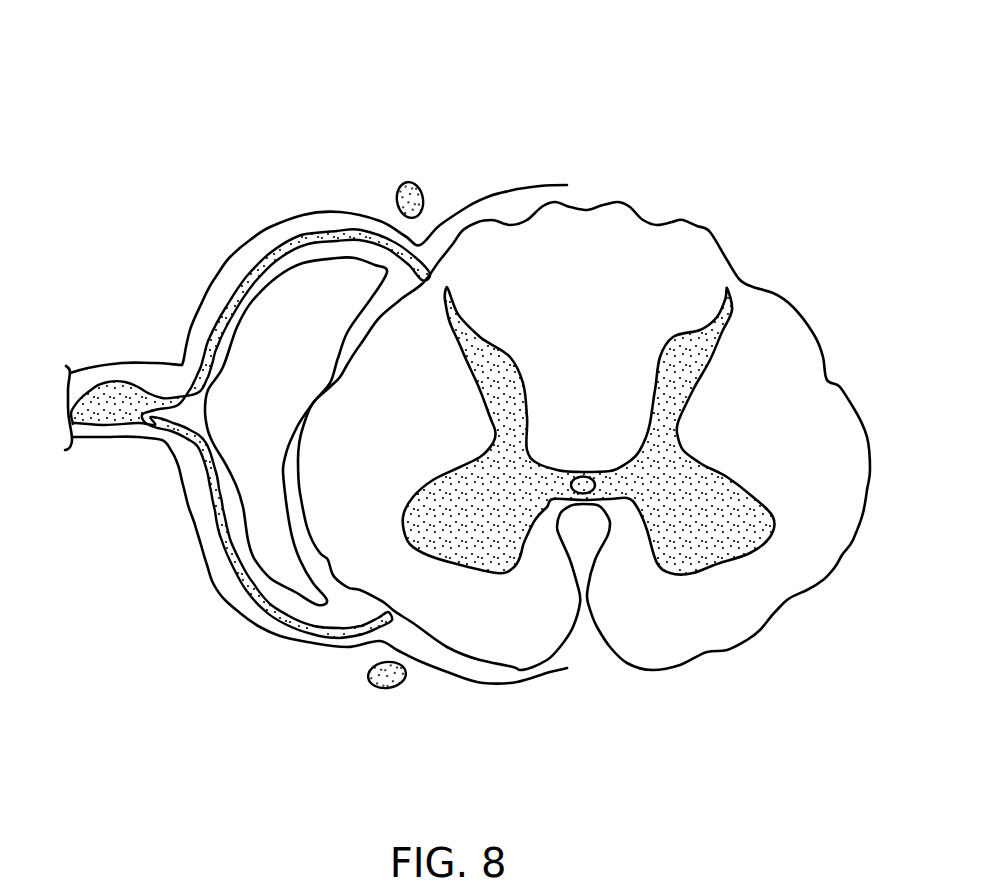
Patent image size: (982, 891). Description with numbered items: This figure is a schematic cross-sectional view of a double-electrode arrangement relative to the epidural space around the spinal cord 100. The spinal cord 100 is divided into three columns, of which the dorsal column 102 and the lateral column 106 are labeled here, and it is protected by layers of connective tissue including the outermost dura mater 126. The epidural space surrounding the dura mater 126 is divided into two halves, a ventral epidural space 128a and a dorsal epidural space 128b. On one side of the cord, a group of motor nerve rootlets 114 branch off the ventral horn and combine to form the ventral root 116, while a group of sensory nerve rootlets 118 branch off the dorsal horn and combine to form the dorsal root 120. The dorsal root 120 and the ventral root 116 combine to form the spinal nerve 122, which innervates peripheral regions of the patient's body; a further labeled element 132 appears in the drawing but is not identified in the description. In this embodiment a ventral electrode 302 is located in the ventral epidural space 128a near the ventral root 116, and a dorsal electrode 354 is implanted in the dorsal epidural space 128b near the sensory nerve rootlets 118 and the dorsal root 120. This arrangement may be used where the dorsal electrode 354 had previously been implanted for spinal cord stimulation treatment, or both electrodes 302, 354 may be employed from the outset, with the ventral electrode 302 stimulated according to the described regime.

The spinal cord 100 is at (668, 68).
The dorsal column 102 is at (548, 303).
The lateral column 106 is at (400, 416).
The motor nerve rootlets 114 is at (318, 632).
The ventral root 116 is at (228, 552).
The sensory nerve rootlets 118 is at (337, 238).
The dorsal root 120 is at (182, 368).
The spinal nerve 122 is at (82, 437).
The dura mater 126 is at (485, 682).
The ventral epidural space 128a is at (569, 697).
The dorsal epidural space 128b is at (572, 153).
The nerve root fibers 132 is at (113, 392).
The ventral electrode 302 is at (385, 690).
The dorsal electrode 354 is at (414, 177).